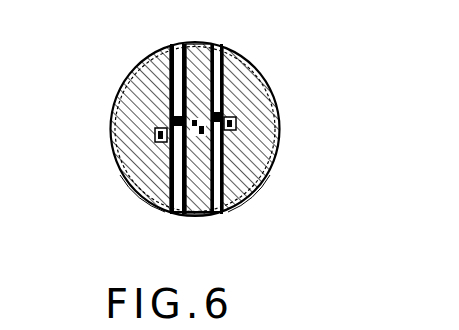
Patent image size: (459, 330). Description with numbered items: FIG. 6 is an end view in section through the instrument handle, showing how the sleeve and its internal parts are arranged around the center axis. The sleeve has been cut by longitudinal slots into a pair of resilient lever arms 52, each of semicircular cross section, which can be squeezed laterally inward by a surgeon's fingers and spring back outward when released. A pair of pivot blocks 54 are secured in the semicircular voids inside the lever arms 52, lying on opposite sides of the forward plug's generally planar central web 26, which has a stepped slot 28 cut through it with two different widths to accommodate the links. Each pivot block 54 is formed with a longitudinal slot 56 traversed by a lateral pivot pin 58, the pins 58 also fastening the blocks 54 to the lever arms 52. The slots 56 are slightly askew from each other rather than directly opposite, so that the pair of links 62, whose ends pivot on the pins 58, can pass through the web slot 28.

The central web 26 is at (186, 208).
The stepped slot 28 is at (168, 47).
The lever arms 52 is at (111, 137).
The pivot blocks 54 is at (118, 117).
The longitudinal slot 56 is at (156, 134).
The pivot pin 58 is at (131, 187).
The links 62 is at (170, 112).